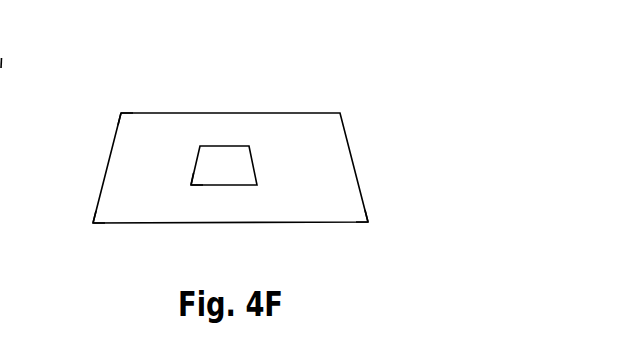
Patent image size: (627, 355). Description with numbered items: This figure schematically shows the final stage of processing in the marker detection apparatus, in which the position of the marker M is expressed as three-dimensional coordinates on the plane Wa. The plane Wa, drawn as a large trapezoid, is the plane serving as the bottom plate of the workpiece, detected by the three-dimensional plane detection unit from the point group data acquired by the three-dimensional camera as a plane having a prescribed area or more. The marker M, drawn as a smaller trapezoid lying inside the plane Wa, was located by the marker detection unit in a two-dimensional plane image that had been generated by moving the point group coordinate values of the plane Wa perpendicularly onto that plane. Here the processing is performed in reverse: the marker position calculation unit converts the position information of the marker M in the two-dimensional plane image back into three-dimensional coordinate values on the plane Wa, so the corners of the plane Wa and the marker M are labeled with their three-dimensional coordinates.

The marker M is at (246, 165).
The plane Wa is at (338, 168).